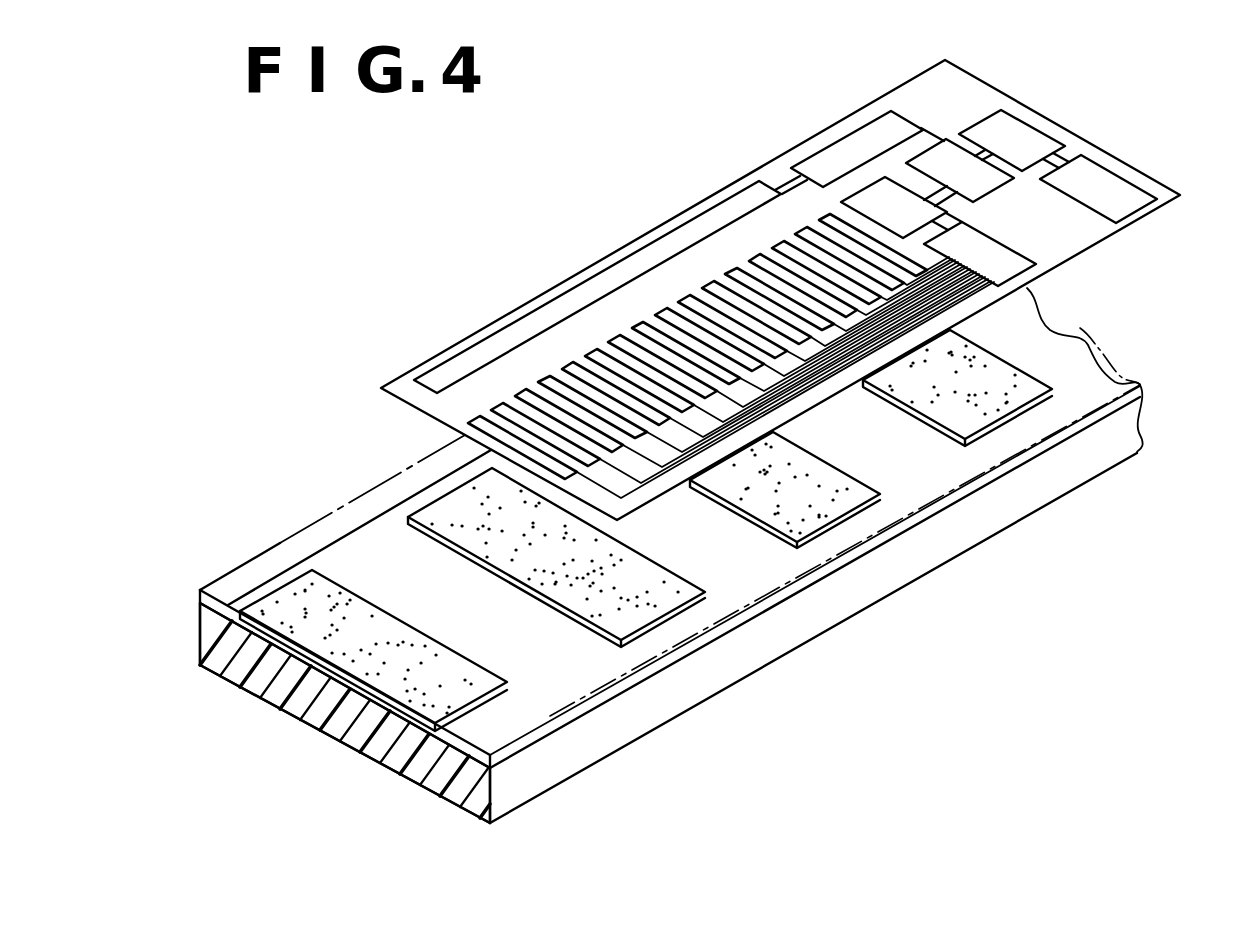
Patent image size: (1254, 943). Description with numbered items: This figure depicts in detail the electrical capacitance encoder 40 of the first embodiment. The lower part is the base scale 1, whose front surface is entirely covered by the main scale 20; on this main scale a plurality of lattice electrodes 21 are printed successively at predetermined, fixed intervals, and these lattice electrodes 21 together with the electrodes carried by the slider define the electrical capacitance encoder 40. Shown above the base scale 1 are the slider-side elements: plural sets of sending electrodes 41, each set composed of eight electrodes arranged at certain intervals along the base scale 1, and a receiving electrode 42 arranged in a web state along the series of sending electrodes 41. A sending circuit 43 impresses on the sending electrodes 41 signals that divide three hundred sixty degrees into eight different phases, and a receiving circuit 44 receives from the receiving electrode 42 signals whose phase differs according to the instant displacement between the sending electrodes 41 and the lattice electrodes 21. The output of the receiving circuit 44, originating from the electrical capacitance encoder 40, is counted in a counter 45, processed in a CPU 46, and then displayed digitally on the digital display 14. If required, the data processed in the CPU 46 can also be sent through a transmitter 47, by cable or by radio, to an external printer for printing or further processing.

The base scale 1 is at (710, 723).
The digital display 14 is at (836, 146).
The main scale 20 is at (223, 578).
The lattice electrodes 21 is at (443, 503).
The electrical capacitance encoder 40 is at (657, 198).
The sending electrodes 41 is at (585, 348).
The receiving electrode 42 is at (612, 270).
The sending circuit 43 is at (1030, 254).
The receiving circuit 44 is at (940, 208).
The counter 45 is at (944, 141).
The CPU 46 is at (1047, 132).
The transmitter 47 is at (1140, 188).